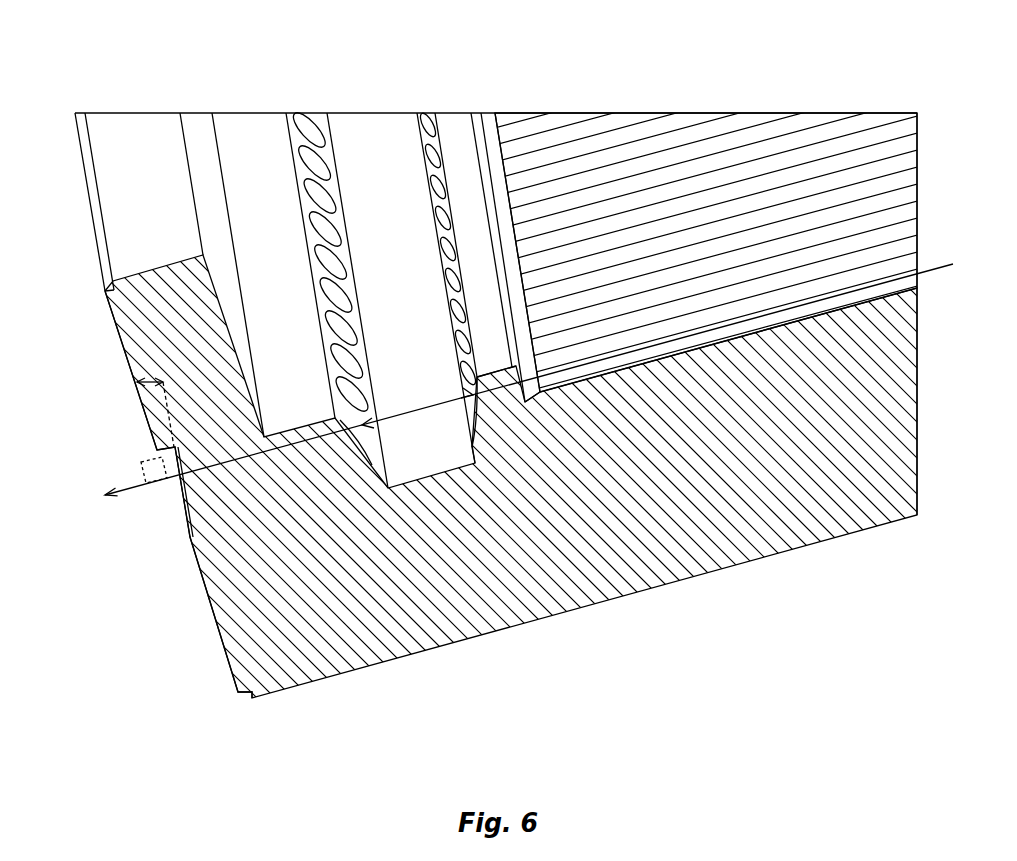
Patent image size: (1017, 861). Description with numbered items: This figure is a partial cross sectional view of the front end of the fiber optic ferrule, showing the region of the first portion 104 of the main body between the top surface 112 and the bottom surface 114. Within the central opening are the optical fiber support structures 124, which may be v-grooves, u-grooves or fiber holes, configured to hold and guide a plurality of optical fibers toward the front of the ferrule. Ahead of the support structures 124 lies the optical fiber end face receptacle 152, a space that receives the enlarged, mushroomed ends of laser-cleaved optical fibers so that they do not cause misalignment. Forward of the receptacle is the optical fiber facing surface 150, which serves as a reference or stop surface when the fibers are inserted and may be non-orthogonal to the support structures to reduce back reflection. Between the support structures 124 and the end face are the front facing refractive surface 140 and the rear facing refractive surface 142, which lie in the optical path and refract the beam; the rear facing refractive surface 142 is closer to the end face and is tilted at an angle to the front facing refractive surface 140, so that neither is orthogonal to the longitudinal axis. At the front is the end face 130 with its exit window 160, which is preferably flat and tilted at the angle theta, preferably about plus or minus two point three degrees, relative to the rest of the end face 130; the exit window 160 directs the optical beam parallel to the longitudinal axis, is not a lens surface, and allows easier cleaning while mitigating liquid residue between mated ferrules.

The first portion 104 is at (528, 647).
The top surface 112 is at (108, 175).
The bottom surface 114 is at (757, 560).
The optical fiber support structures 124 is at (898, 192).
The end face 130 is at (219, 633).
The front facing refractive surface 140 is at (424, 118).
The rear facing refractive surface 142 is at (302, 120).
The optical fiber facing surface 150 is at (450, 120).
The optical fiber end face receptacle 152 is at (497, 125).
The exit window 160 is at (180, 505).